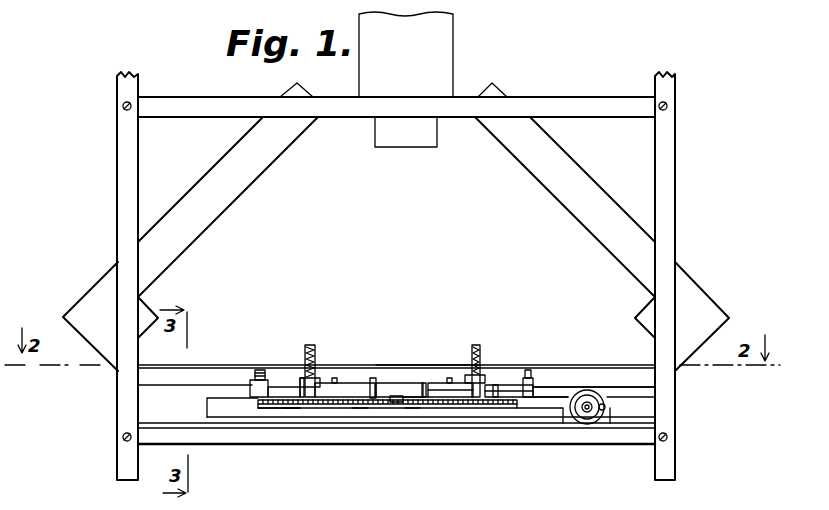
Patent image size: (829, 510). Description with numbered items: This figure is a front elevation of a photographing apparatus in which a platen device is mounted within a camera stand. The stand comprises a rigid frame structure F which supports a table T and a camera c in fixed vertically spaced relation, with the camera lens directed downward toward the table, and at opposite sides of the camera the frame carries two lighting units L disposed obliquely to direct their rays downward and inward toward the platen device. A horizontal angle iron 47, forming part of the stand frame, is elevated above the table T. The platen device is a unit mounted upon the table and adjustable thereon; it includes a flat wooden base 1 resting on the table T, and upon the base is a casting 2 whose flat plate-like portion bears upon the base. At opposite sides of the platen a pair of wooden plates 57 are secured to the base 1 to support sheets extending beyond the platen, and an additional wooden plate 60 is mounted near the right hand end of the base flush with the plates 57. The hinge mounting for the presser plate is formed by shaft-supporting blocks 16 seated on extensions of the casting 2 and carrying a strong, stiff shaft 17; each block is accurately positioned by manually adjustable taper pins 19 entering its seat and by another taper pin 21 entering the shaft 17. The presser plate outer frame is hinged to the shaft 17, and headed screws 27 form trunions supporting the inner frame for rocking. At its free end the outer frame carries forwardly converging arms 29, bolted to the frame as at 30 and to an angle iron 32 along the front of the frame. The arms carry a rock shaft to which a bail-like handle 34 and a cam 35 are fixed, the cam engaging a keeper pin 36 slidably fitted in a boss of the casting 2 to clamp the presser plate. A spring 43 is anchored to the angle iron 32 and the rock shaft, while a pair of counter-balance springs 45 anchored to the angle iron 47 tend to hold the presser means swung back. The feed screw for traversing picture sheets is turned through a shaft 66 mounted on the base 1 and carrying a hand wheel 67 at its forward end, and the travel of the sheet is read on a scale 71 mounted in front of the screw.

The frame structure F is at (128, 177).
The lighting unit L is at (207, 178).
The camera c is at (442, 70).
The table T is at (165, 418).
The plate 57 is at (208, 402).
The casting 2 is at (333, 410).
The base 1 is at (270, 410).
The scale 71 is at (293, 410).
The keeper pin 36 is at (397, 405).
The cam 35 is at (412, 408).
The taper pin 21 is at (263, 370).
The shaft-supporting block 16 is at (278, 388).
The taper pin 19 is at (295, 387).
The bolt 30 is at (317, 365).
The arm 29 is at (348, 390).
The spring 43 is at (377, 385).
The angle iron 47 is at (387, 367).
The handle 34 is at (408, 385).
The angle iron 32 is at (433, 385).
The counter-balance spring 45 is at (482, 355).
The shaft 17 is at (510, 387).
The headed screw 27 is at (532, 368).
The wooden plate 60 is at (643, 402).
The shaft 66 is at (587, 410).
The hand wheel 67 is at (597, 410).